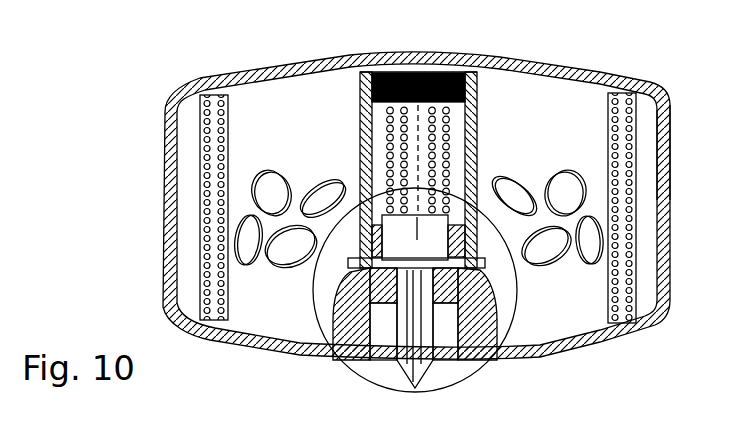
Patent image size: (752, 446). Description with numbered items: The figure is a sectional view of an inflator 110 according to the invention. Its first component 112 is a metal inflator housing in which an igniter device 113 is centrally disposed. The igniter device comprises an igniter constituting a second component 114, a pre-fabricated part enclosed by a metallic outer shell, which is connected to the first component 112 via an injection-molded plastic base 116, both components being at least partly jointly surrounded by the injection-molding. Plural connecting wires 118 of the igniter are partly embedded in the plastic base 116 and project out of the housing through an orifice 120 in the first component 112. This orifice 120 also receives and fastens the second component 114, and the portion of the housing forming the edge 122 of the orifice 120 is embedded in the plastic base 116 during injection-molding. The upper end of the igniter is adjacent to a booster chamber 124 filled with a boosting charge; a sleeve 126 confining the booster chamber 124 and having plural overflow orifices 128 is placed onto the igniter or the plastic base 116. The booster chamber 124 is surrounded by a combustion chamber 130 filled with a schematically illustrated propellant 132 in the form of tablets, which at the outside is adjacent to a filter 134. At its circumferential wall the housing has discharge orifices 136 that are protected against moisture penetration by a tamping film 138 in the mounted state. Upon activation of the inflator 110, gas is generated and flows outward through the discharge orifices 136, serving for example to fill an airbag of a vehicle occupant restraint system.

The inflator 110 is at (251, 31).
The first component 112 is at (593, 73).
The igniter device 113 is at (350, 80).
The second component 114 is at (381, 239).
The plastic base 116 is at (356, 355).
The connecting wires 118 is at (413, 388).
The orifice 120 is at (418, 331).
The edge 122 is at (467, 271).
The booster chamber 124 is at (361, 98).
The sleeve 126 is at (445, 88).
The overflow orifices 128 is at (360, 151).
The combustion chamber 130 is at (536, 86).
The propellant 132 is at (553, 172).
The filter 134 is at (668, 104).
The discharge orifices 136 is at (666, 178).
The tamping film 138 is at (665, 197).